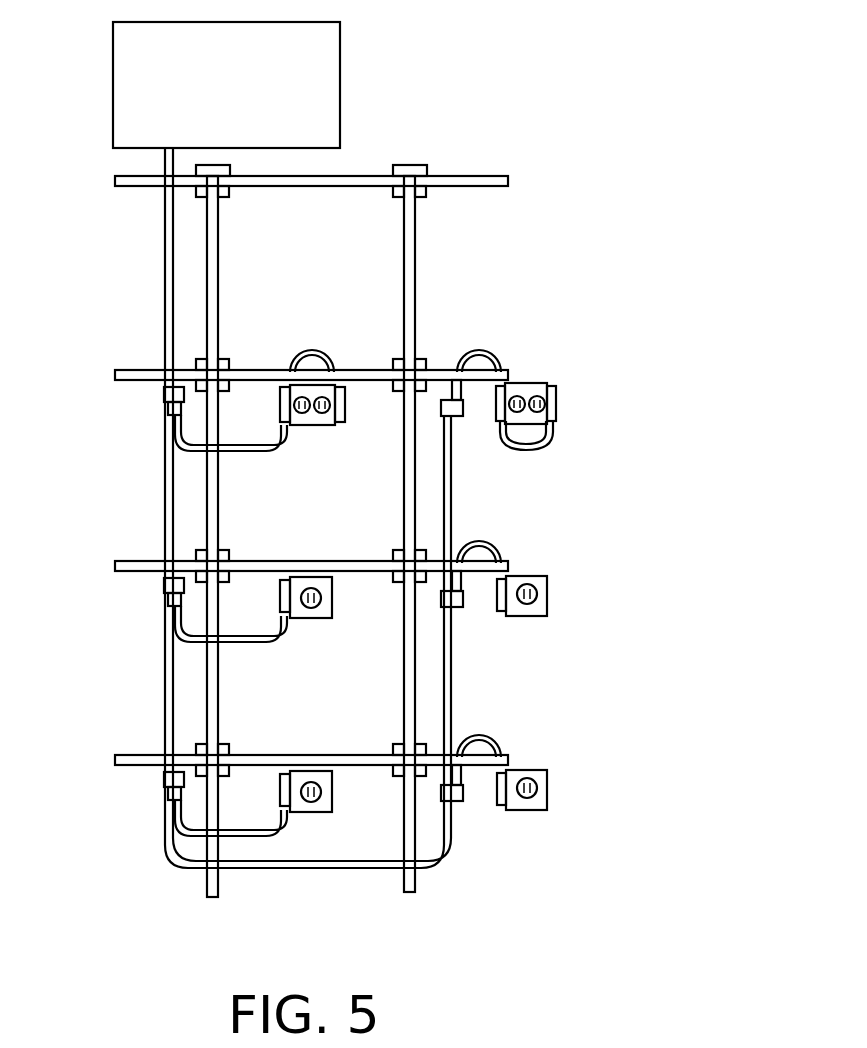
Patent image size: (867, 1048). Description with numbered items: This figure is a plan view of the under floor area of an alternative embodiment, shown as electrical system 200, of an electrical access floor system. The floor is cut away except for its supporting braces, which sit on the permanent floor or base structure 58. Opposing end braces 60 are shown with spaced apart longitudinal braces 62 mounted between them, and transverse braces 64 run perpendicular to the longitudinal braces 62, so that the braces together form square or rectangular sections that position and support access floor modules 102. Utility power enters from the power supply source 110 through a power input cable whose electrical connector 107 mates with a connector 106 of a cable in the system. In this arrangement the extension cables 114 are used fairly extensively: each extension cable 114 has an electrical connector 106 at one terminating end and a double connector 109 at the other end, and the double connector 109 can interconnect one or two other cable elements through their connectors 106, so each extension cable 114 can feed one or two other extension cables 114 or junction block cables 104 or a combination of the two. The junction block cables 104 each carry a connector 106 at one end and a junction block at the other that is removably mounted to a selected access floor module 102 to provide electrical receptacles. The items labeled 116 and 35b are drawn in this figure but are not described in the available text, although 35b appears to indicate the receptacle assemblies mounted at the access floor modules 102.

The power supply source 110 is at (340, 106).
The end braces 60 is at (345, 177).
The permanent floor or base structure 58 is at (316, 534).
The longitudinal braces 62 is at (404, 636).
The transverse braces 64 is at (372, 368).
The electrical connector 107 is at (165, 284).
The extension cables 114 is at (175, 490).
The double connector 109 is at (165, 393).
The connector 106 is at (165, 408).
The junction block cable 104 is at (305, 349).
The access floor modules 102 is at (306, 428).
The receptacle mounting bracket 116 is at (324, 410).
The outlet assembly 35b is at (297, 326).
The electrical system 200 is at (487, 298).